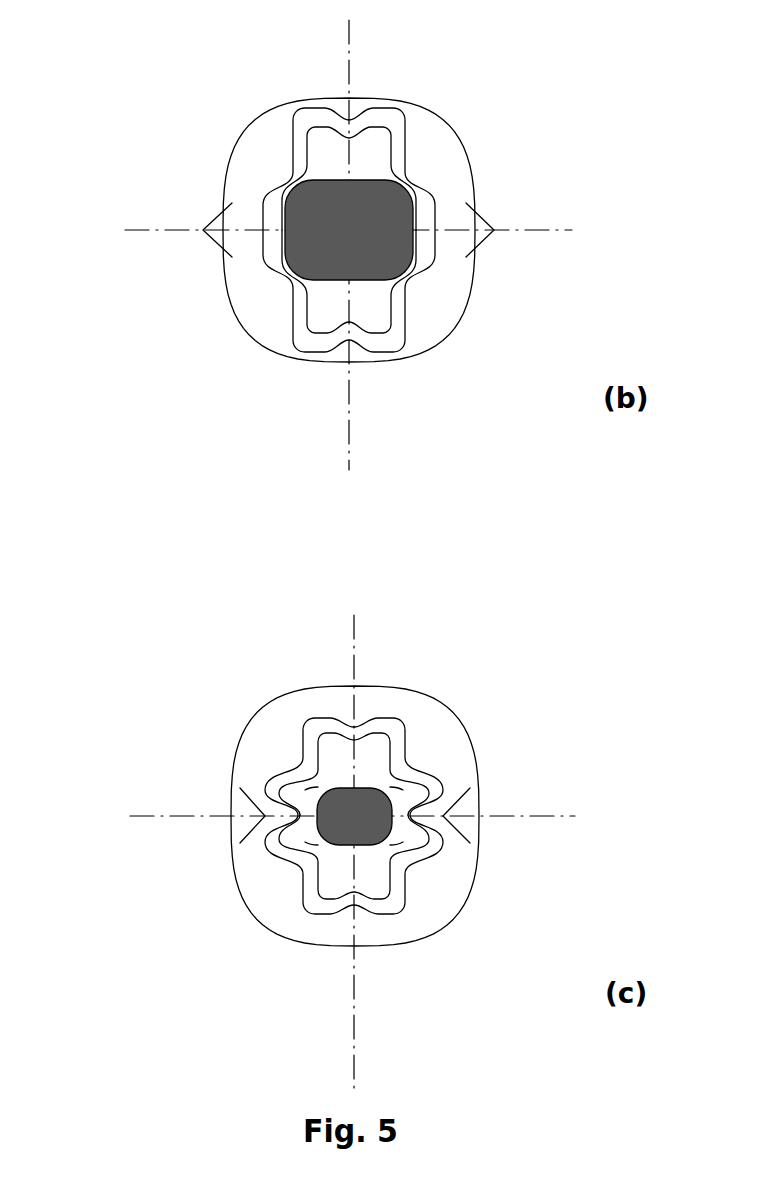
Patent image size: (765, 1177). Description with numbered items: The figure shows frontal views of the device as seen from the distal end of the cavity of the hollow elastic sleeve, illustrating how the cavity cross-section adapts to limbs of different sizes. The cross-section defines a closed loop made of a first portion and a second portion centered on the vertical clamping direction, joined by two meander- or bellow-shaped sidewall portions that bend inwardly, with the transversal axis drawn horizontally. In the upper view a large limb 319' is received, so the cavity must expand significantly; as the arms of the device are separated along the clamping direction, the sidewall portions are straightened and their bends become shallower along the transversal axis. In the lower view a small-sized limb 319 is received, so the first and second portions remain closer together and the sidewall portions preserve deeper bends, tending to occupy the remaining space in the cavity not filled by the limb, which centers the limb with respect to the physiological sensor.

The small-sized limb 319 is at (285, 878).
The large limb 319' is at (290, 291).